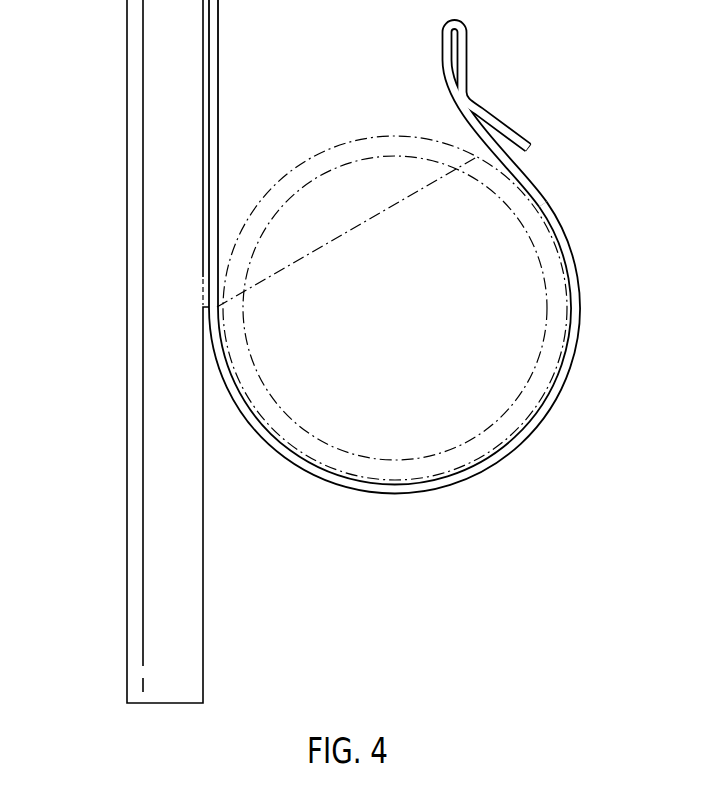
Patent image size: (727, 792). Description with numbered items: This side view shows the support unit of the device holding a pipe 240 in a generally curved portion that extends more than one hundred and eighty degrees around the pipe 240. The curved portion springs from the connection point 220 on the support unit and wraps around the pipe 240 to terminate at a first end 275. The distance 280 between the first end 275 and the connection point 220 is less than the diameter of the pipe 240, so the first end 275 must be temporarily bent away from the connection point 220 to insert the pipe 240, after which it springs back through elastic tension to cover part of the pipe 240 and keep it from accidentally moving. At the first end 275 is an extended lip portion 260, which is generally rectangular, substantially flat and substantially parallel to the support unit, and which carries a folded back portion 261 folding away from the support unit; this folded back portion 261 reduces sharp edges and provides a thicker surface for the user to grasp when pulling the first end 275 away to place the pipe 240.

The connection point 220 is at (207, 306).
The pipe 240 is at (528, 400).
The extended lip portion 260 is at (449, 44).
The folded back portion 261 is at (467, 70).
The first end 275 is at (461, 131).
The distance 280 is at (352, 231).